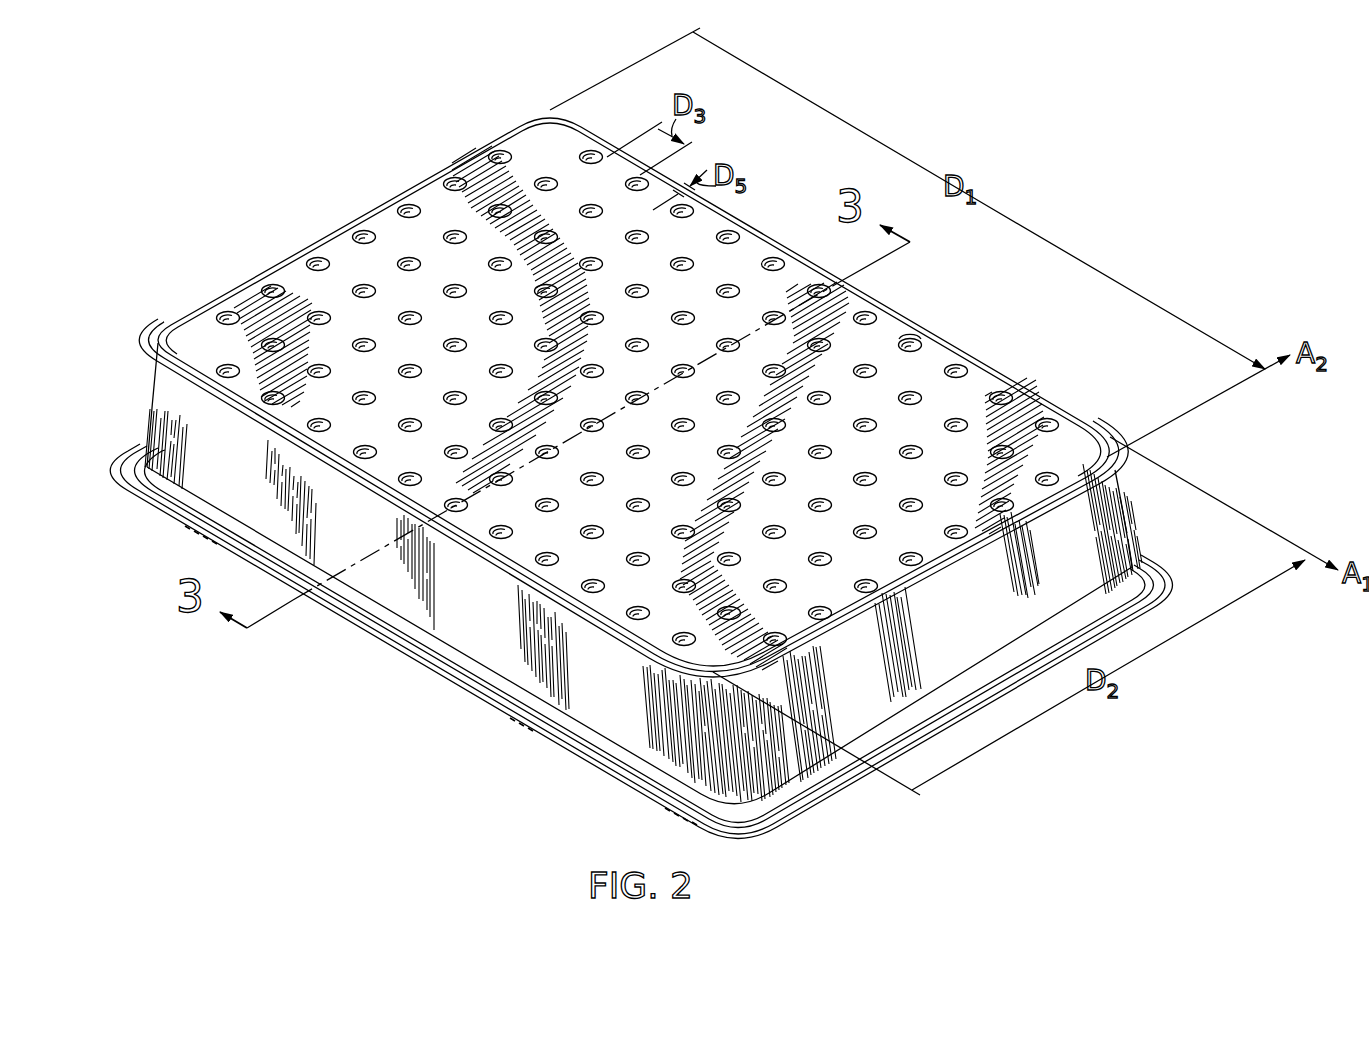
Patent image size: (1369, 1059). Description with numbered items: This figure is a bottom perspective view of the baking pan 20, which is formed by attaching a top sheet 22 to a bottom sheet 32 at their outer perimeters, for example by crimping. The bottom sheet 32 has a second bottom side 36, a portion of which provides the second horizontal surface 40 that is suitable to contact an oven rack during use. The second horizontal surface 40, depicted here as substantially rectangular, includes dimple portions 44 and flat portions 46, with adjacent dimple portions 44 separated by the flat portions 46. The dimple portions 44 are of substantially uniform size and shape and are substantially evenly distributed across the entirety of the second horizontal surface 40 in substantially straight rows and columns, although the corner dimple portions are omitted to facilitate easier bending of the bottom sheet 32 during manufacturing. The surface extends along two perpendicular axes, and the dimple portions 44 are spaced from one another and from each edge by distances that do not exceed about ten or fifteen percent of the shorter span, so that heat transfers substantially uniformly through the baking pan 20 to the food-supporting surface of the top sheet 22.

The baking pan 20 is at (300, 193).
The top sheet 22 is at (130, 504).
The bottom sheet 32 is at (205, 492).
The second bottom side 36 is at (548, 143).
The second horizontal surface 40 is at (692, 462).
The dimple portions 44 is at (916, 341).
The flat portions 46 is at (898, 331).